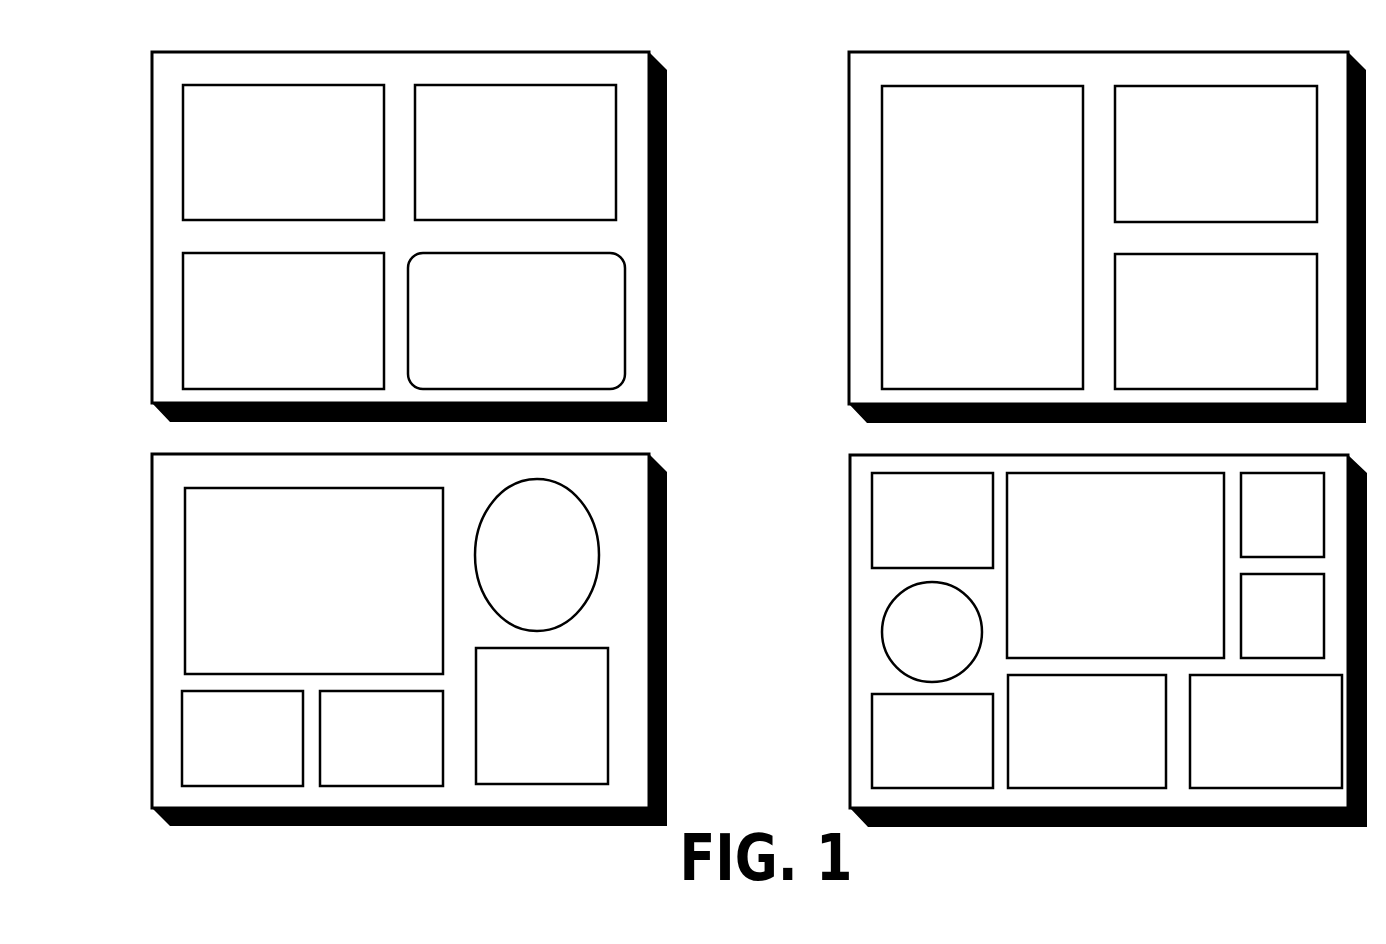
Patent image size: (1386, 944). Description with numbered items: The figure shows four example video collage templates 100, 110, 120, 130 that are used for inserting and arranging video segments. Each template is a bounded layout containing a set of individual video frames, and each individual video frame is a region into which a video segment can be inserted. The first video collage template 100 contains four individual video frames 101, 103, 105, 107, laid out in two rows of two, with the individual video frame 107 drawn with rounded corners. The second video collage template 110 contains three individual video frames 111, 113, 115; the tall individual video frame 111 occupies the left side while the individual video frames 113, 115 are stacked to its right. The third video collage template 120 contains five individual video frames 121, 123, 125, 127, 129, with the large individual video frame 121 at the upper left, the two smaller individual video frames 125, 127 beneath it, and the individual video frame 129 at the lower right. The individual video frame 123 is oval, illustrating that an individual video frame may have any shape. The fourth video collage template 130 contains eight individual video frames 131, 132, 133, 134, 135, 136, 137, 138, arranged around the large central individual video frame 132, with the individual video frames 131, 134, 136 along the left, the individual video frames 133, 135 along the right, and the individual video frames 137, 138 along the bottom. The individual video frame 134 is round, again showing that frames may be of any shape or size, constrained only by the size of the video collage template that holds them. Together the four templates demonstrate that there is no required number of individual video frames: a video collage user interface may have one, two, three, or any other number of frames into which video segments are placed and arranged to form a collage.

The video collage template 100 is at (667, 213).
The individual video frame 101 is at (262, 165).
The individual video frame 103 is at (495, 165).
The individual video frame 105 is at (262, 333).
The individual video frame 107 is at (495, 333).
The video collage template 110 is at (849, 115).
The individual video frame 111 is at (962, 251).
The individual video frame 113 is at (1195, 168).
The individual video frame 115 is at (1195, 336).
The video collage template 120 is at (667, 607).
The individual video frame 121 is at (293, 597).
The individual video frame 123 is at (519, 568).
The individual video frame 125 is at (222, 752).
The individual video frame 127 is at (361, 752).
The individual video frame 129 is at (521, 729).
The video collage template 130 is at (849, 499).
The individual video frame 131 is at (911, 534).
The individual video frame 132 is at (1094, 582).
The individual video frame 133 is at (1261, 527).
The individual video frame 134 is at (911, 647).
The individual video frame 135 is at (1261, 628).
The individual video frame 136 is at (911, 755).
The individual video frame 137 is at (1066, 743).
The individual video frame 138 is at (1245, 743).